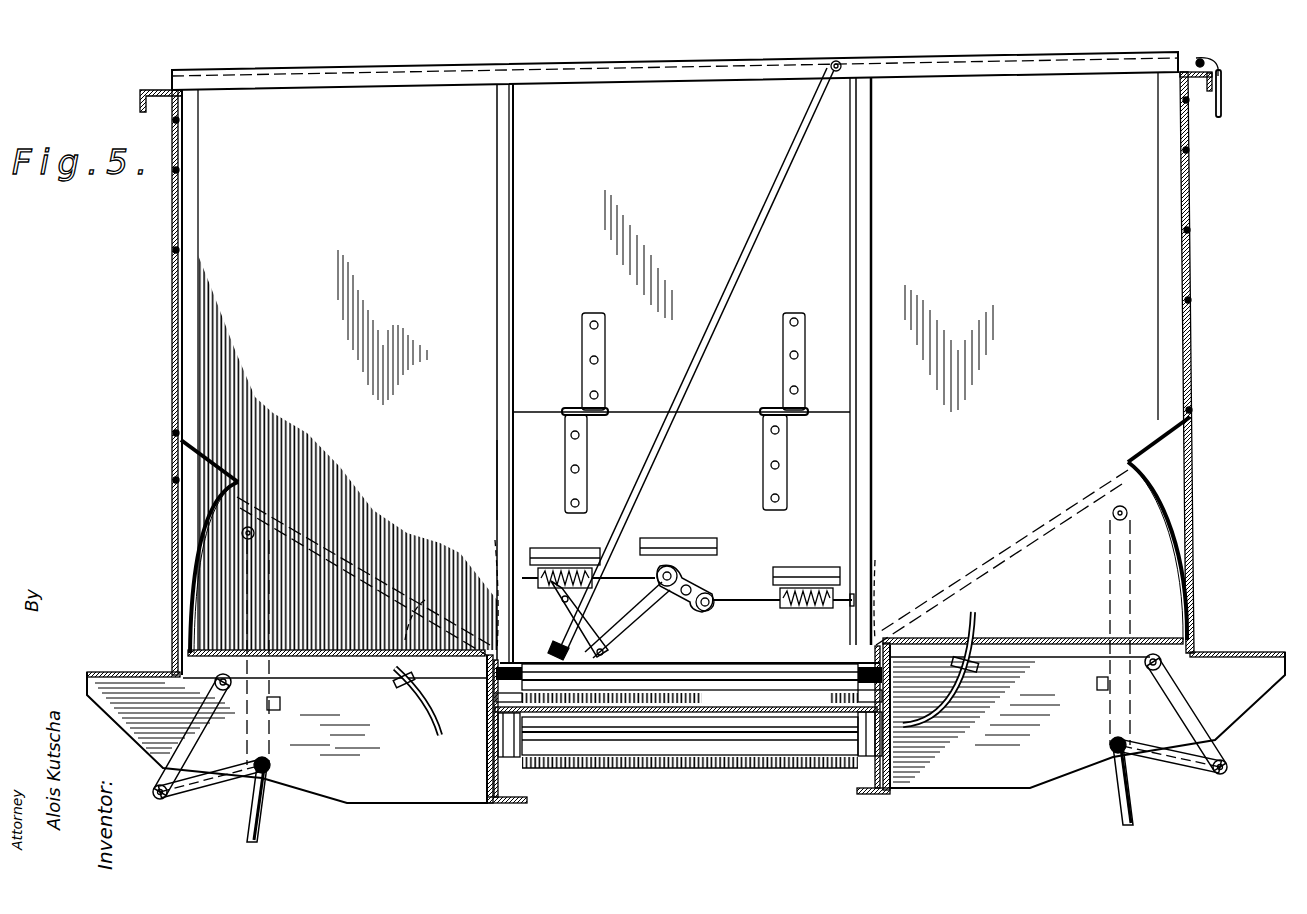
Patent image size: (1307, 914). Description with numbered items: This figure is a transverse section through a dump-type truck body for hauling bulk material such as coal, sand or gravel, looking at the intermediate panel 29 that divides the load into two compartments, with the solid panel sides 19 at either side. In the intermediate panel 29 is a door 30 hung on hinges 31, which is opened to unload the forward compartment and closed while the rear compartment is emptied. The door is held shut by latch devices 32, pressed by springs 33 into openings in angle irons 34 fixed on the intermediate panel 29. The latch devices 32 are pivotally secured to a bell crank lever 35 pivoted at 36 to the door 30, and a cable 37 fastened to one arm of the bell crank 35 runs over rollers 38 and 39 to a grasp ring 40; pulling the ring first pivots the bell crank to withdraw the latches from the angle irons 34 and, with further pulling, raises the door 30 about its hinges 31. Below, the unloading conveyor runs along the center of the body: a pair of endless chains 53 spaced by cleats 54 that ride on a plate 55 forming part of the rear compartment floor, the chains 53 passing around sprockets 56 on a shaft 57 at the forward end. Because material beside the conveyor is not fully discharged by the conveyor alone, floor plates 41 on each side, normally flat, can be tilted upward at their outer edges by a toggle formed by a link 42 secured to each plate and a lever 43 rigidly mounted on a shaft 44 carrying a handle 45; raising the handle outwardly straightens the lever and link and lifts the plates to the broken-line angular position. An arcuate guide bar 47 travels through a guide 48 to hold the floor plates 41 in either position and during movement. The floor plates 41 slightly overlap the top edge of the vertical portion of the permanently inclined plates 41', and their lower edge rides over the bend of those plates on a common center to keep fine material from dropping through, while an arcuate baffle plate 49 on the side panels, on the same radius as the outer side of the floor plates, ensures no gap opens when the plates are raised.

The solid panel sides 19 is at (172, 285).
The intermediate panel 29 is at (392, 166).
The door 30 is at (730, 468).
The hinges 31 is at (571, 408).
The latch devices 32 is at (527, 562).
The springs 33 is at (558, 590).
The angle irons 34 is at (497, 478).
The bell crank lever 35 is at (698, 596).
The pivot 36 is at (684, 596).
The cable 37 is at (758, 226).
The roller 38 is at (841, 63).
The roller 39 is at (1200, 58).
The grasp ring 40 is at (1222, 105).
The floor plates 41 is at (682, 590).
The permanently inclined plates 41' is at (657, 579).
The link 42 is at (1133, 578).
The lever 43 is at (1138, 708).
The shaft 44 is at (1110, 741).
The handle 45 is at (1115, 802).
The guide bar 47 is at (957, 692).
The guide 48 is at (980, 668).
The arcuate baffle plate 49 is at (205, 530).
The endless chains 53 is at (498, 768).
The cleats 54 is at (780, 692).
The plate 55 is at (737, 709).
The sprockets 56 is at (540, 755).
The shaft 57 is at (645, 728).